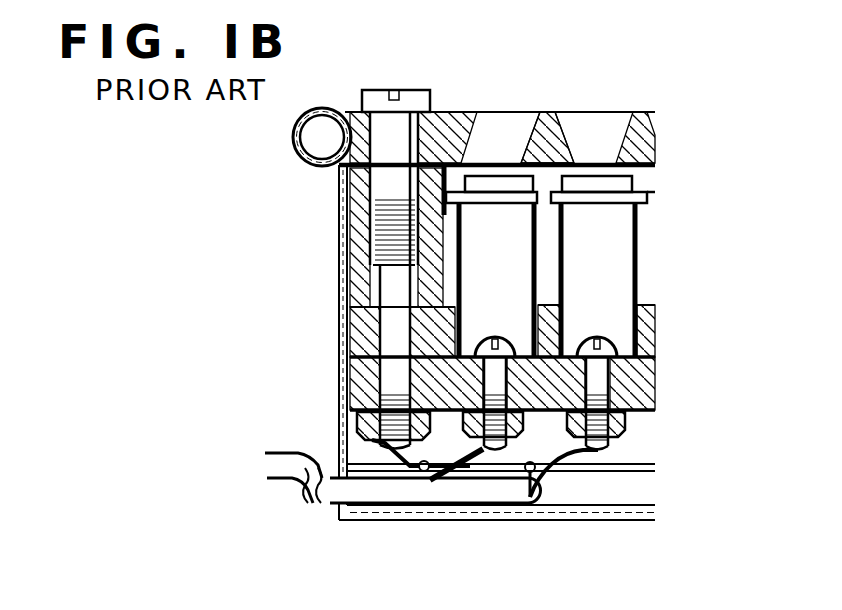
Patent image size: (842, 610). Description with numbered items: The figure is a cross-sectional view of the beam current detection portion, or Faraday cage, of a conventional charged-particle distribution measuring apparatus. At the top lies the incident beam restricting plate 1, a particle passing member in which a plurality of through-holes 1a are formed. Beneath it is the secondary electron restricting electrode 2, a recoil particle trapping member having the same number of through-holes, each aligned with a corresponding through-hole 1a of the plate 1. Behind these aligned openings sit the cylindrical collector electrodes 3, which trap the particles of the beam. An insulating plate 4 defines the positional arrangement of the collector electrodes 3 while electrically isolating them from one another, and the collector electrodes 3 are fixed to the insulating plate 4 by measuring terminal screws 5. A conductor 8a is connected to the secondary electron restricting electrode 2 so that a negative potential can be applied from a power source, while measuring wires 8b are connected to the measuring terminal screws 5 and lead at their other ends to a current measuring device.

The incident beam restricting plate 1 is at (645, 136).
The through-holes 1a is at (617, 125).
The secondary electron restricting electrode 2 is at (652, 198).
The cylindrical collector electrodes 3 is at (640, 290).
The insulating plate 4 is at (645, 380).
The measuring terminal screws 5 is at (483, 337).
The conductor 8a is at (640, 467).
The measuring wires 8b is at (478, 495).